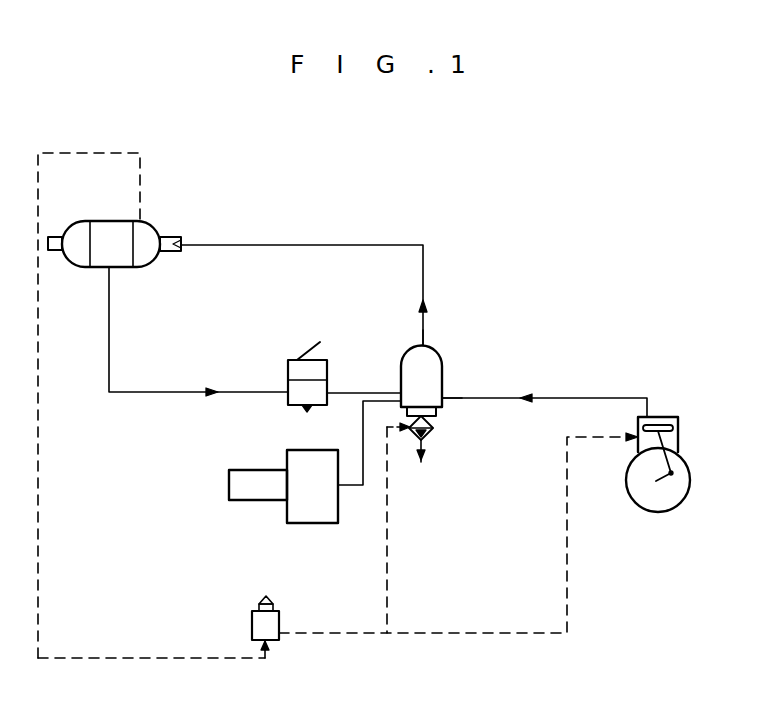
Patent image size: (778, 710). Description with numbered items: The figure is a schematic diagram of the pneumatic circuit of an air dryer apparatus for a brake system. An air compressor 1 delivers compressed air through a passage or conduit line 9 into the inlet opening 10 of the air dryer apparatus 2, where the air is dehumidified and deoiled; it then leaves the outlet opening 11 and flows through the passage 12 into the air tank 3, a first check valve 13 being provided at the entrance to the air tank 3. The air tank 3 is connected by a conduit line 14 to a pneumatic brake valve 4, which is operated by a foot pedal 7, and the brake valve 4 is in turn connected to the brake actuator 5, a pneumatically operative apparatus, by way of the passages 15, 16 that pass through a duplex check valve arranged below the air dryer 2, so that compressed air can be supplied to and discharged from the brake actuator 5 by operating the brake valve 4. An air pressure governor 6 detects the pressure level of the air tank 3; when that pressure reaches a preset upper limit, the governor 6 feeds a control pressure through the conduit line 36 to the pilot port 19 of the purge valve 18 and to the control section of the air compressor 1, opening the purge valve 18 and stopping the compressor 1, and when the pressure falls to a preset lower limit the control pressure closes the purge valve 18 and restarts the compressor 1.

The air compressor 1 is at (658, 513).
The air dryer apparatus 2 is at (444, 367).
The air tank 3 is at (108, 219).
The pneumatic brake valve 4 is at (288, 369).
The brake actuator 5 is at (316, 524).
The air pressure governor 6 is at (252, 621).
The foot pedal 7 is at (299, 346).
The passage or conduit line 9 is at (588, 397).
The inlet opening 10 is at (445, 403).
The outlet opening 11 is at (425, 345).
The passage 12 is at (340, 243).
The first check valve 13 is at (172, 234).
The passage or conduit line 14 is at (112, 322).
The passage 15 is at (365, 390).
The passage 16 is at (363, 434).
The purge valve 18 is at (431, 432).
The pilot port 19 is at (412, 434).
The passage or conduit line 36 is at (389, 549).